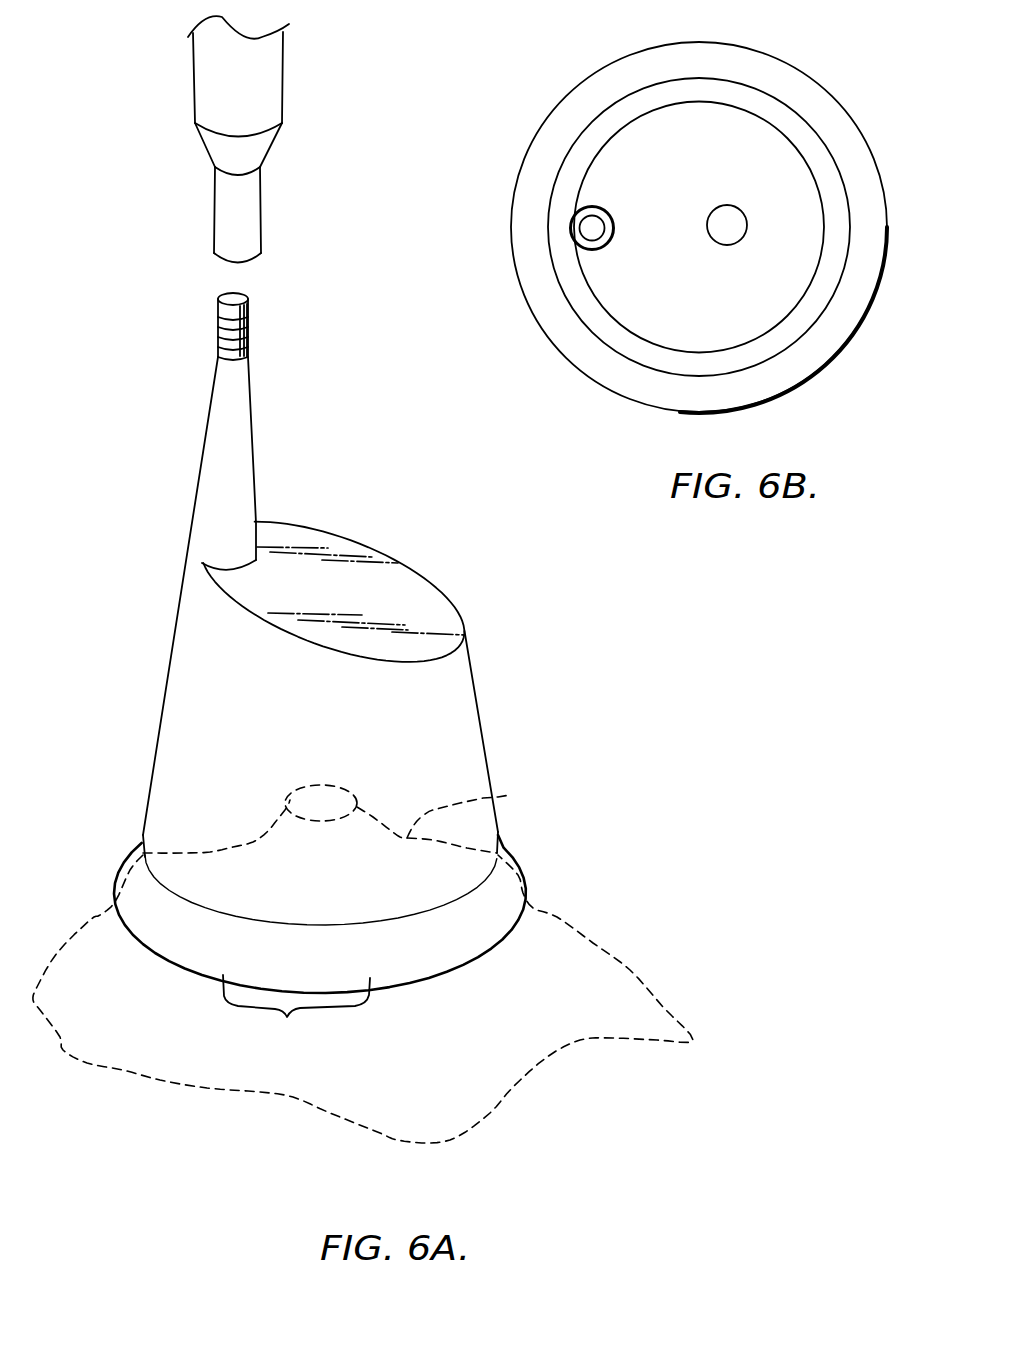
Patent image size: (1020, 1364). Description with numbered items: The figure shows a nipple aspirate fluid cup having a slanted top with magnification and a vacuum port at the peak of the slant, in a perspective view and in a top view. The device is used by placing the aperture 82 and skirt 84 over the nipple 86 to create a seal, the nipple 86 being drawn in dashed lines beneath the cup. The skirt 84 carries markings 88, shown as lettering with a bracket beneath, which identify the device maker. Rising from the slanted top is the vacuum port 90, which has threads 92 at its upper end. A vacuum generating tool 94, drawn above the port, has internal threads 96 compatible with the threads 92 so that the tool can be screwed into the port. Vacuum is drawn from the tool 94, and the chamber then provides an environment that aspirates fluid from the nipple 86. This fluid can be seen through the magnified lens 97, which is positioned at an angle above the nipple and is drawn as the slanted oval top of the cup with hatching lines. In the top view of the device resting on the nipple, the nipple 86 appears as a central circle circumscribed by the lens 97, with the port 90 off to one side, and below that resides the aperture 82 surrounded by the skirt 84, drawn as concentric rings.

In FIG. 6B, the aperture 82 is at (825, 309).
In FIG. 6A, the skirt 84 is at (320, 912).
In FIG. 6B, the skirt 84 is at (606, 370).
In FIG. 6A, the nipple 86 is at (510, 795).
In FIG. 6B, the nipple 86 is at (745, 215).
In FIG. 6A, the markings 88 is at (296, 993).
In FIG. 6A, the vacuum port 90 is at (230, 431).
In FIG. 6B, the vacuum port 90 is at (578, 246).
In FIG. 6A, the threads 92 is at (218, 338).
In FIG. 6A, the vacuum generating tool 94 is at (272, 88).
In FIG. 6A, the internal threads 96 is at (250, 235).
In FIG. 6A, the magnified lens 97 is at (363, 582).
In FIG. 6B, the magnified lens 97 is at (724, 143).